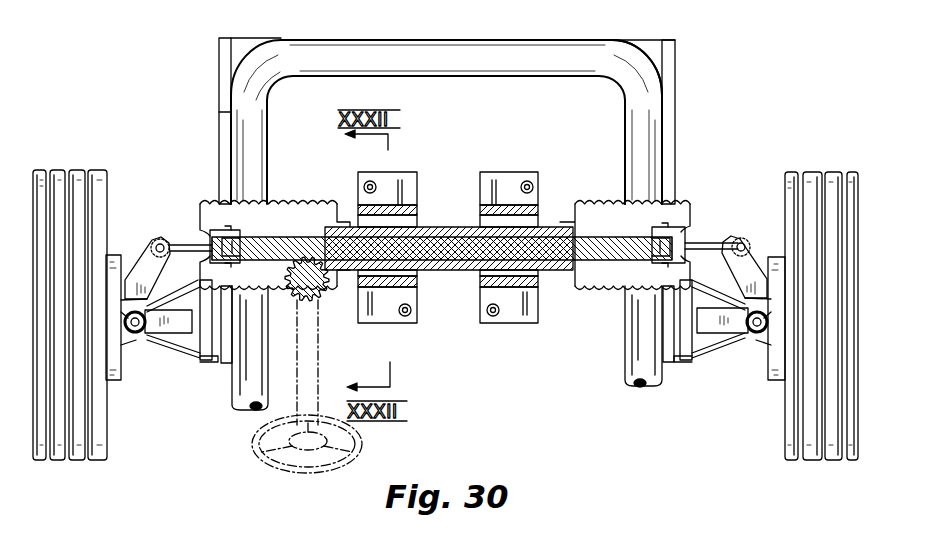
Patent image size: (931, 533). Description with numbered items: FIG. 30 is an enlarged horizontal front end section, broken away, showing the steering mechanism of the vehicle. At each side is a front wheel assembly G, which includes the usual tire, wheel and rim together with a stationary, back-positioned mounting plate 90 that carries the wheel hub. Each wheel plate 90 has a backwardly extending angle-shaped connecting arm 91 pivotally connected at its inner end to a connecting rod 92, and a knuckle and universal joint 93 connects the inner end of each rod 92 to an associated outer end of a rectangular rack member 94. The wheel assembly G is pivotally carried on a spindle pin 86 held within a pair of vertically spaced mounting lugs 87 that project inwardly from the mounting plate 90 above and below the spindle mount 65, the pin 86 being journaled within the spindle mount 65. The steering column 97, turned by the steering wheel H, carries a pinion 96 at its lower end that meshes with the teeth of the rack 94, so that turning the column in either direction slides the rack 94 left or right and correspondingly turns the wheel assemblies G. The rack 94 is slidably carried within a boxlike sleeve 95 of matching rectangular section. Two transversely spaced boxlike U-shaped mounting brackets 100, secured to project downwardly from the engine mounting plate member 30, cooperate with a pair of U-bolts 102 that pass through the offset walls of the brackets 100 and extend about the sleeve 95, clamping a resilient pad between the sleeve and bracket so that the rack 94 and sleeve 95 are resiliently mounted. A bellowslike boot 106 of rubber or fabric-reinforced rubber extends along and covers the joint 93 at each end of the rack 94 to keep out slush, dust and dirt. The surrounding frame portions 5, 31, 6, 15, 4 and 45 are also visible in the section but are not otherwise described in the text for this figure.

The frame top cross member 5 is at (467, 41).
The engine mounting plate member 30 is at (664, 57).
The frame side member 31 is at (672, 113).
The frame tube leg 6 is at (652, 127).
The upright post 15 is at (232, 88).
The lower post / leg 4 is at (238, 130).
The bellowslike boot 106 is at (290, 202).
The boxlike sleeve 95 is at (552, 271).
The rack member 94 is at (607, 261).
The mounting bracket 100 is at (417, 180).
The U-bolt 102 is at (417, 273).
The pinion 96 is at (321, 294).
The steering column 97 is at (310, 349).
The steering wheel H is at (258, 457).
The knuckle and universal joint 93 is at (222, 230).
The connecting rod 92 is at (183, 241).
The connecting arm 91 is at (140, 255).
The mounting lugs 87 is at (130, 337).
The spindle pin 86 is at (136, 333).
The lower control arm 45 is at (190, 322).
The spindle mount 65 is at (156, 340).
The mounting plate 90 is at (114, 382).
The front wheel assembly G is at (62, 168).